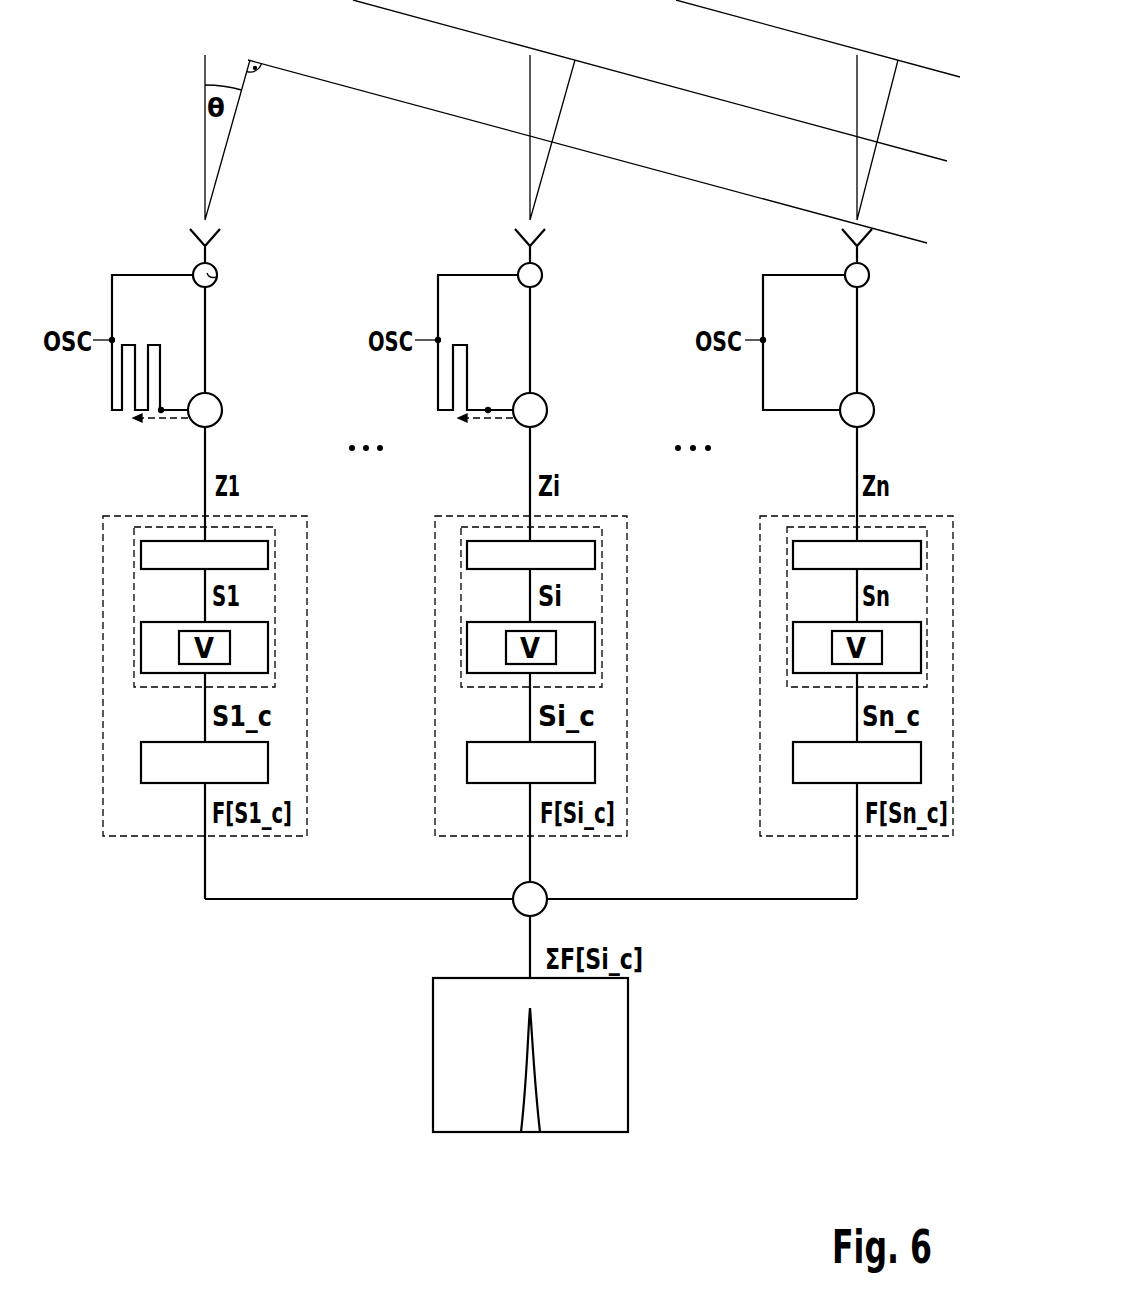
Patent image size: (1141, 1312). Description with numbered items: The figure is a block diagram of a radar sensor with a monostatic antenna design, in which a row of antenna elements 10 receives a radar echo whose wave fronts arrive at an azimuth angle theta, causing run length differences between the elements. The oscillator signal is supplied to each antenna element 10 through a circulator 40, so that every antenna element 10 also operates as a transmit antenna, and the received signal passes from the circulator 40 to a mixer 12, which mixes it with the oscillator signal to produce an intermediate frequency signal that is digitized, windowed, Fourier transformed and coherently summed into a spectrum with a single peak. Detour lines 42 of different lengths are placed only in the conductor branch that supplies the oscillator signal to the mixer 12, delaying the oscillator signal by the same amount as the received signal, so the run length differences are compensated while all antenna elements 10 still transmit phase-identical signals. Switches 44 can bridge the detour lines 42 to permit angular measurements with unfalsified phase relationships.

The antenna element 10 is at (197, 240).
The circulator 40 is at (216, 277).
The detour line 42 is at (133, 345).
The mixer 12 is at (216, 412).
The switch 44 is at (128, 414).